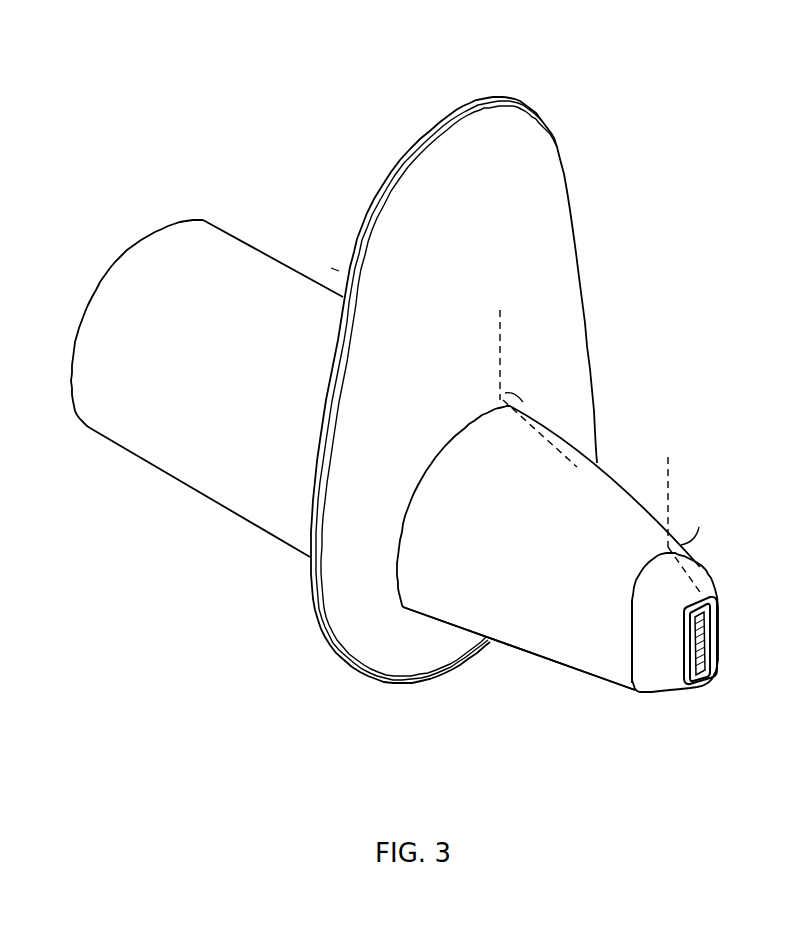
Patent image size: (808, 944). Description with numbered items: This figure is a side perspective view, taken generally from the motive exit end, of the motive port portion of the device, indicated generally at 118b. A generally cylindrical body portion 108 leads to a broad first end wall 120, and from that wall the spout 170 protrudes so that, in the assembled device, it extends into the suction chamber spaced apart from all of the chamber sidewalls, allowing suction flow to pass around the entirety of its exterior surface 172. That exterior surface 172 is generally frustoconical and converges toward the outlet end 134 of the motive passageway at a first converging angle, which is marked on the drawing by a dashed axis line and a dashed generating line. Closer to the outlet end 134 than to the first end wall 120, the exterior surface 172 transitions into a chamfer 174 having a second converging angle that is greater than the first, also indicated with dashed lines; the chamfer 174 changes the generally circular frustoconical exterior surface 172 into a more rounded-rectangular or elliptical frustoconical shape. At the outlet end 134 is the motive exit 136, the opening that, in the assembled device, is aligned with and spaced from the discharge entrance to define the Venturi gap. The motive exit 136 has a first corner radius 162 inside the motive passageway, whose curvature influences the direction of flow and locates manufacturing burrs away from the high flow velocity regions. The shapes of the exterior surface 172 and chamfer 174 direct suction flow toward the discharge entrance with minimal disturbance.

The dispensing head assembly 118b is at (493, 61).
The first end wall 120 is at (358, 222).
The cylindrical body 108 is at (184, 484).
The spout 170 is at (590, 515).
The exterior surface 172 is at (519, 655).
The chamfer 174 is at (699, 568).
The outlet end 134 is at (631, 617).
The motive exit 136 is at (718, 636).
The first corner radius 162 is at (709, 672).